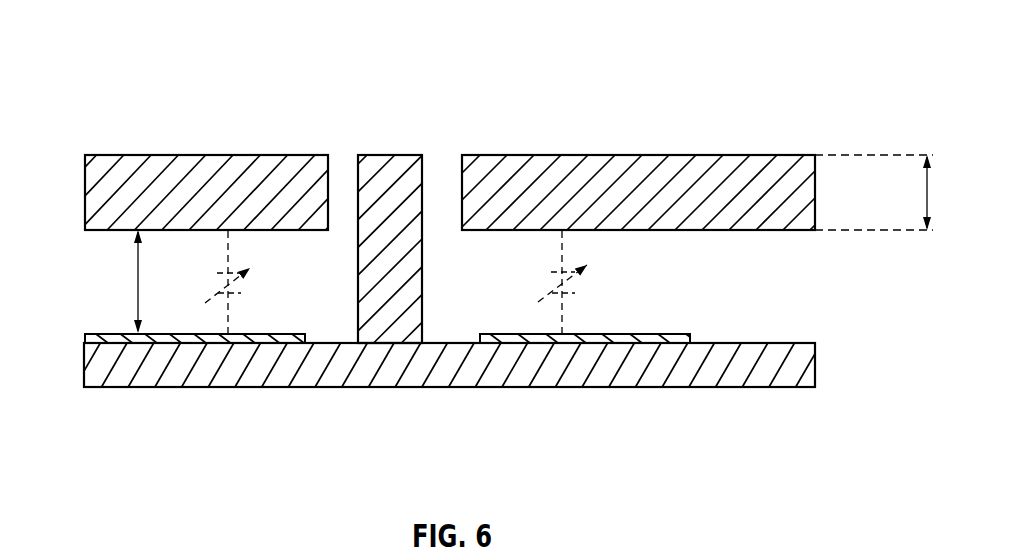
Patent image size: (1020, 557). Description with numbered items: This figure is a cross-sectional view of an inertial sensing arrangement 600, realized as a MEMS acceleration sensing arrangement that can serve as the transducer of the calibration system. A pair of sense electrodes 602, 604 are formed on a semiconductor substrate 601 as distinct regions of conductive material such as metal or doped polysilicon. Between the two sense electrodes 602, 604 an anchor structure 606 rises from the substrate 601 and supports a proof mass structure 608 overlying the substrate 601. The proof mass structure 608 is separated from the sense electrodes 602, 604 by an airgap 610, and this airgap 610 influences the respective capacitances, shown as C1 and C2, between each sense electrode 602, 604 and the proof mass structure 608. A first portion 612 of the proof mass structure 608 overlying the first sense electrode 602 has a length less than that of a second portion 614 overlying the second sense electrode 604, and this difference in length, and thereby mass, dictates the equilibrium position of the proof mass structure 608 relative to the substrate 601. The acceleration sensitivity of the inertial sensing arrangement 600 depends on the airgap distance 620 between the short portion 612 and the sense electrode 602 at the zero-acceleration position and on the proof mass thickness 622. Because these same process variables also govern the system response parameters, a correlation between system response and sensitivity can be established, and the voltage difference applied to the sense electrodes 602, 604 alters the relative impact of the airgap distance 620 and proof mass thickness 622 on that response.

The inertial sensing arrangement 600 is at (113, 46).
The semiconductor substrate 601 is at (728, 378).
The first sense electrode 602 is at (245, 348).
The second sense electrode 604 is at (567, 348).
The anchor structure 606 is at (424, 259).
The proof mass structure 608 is at (827, 170).
The airgap 610 is at (125, 295).
The first portion of the proof mass structure 612 is at (189, 152).
The second portion of the proof mass structure 614 is at (614, 152).
The airgap distance 620 is at (137, 255).
The proof mass thickness 622 is at (926, 193).
The first capacitance C1 is at (246, 282).
The second capacitance C2 is at (580, 282).